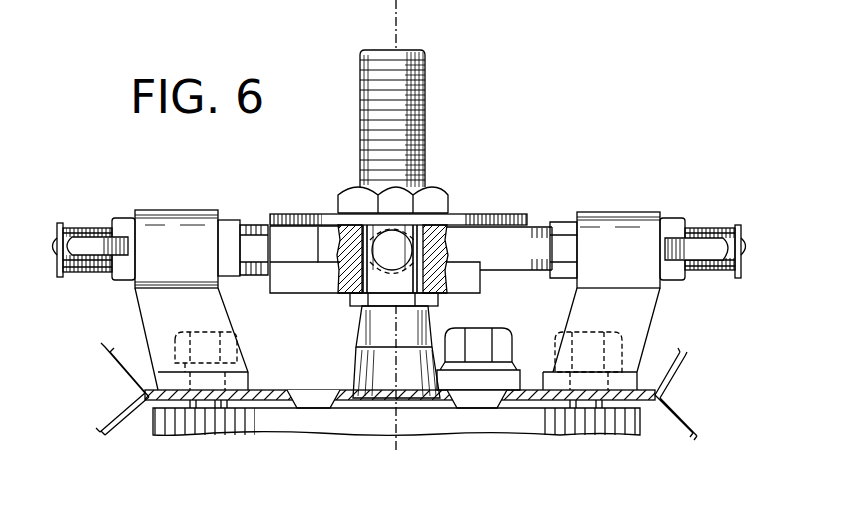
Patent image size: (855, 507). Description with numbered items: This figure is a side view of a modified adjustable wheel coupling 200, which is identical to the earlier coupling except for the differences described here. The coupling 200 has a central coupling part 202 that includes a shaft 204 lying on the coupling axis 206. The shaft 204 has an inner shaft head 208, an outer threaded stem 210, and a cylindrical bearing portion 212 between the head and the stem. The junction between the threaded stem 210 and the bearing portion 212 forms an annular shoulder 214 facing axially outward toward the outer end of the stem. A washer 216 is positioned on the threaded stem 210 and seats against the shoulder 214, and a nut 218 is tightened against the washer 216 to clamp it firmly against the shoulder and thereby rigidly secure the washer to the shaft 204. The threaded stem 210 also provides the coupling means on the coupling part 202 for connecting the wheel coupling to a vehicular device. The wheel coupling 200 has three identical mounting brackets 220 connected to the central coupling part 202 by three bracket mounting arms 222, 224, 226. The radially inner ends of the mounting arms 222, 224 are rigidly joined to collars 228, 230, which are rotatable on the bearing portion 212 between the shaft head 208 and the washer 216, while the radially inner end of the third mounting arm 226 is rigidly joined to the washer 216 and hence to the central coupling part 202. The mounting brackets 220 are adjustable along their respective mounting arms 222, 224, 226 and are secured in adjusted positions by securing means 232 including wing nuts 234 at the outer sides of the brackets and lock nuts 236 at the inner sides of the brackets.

The adjustable wheel coupling 200 is at (524, 144).
The central coupling part 202 is at (332, 202).
The shaft 204 is at (428, 136).
The coupling axis 206 is at (396, 20).
The shaft head 208 is at (356, 310).
The threaded stem 210 is at (425, 74).
The cylindrical bearing portion 212 is at (374, 280).
The annular shoulder 214 is at (363, 228).
The washer 216 is at (257, 218).
The nut 218 is at (368, 226).
The mounting bracket 220 is at (136, 323).
The bracket mounting arm 222 is at (78, 224).
The bracket mounting arm 224 is at (719, 228).
The third mounting arm 226 is at (402, 222).
The collar 228 is at (250, 298).
The collar 230 is at (501, 240).
The securing means 232 is at (104, 284).
The wing nut 234 is at (124, 218).
The lock nut 236 is at (188, 210).